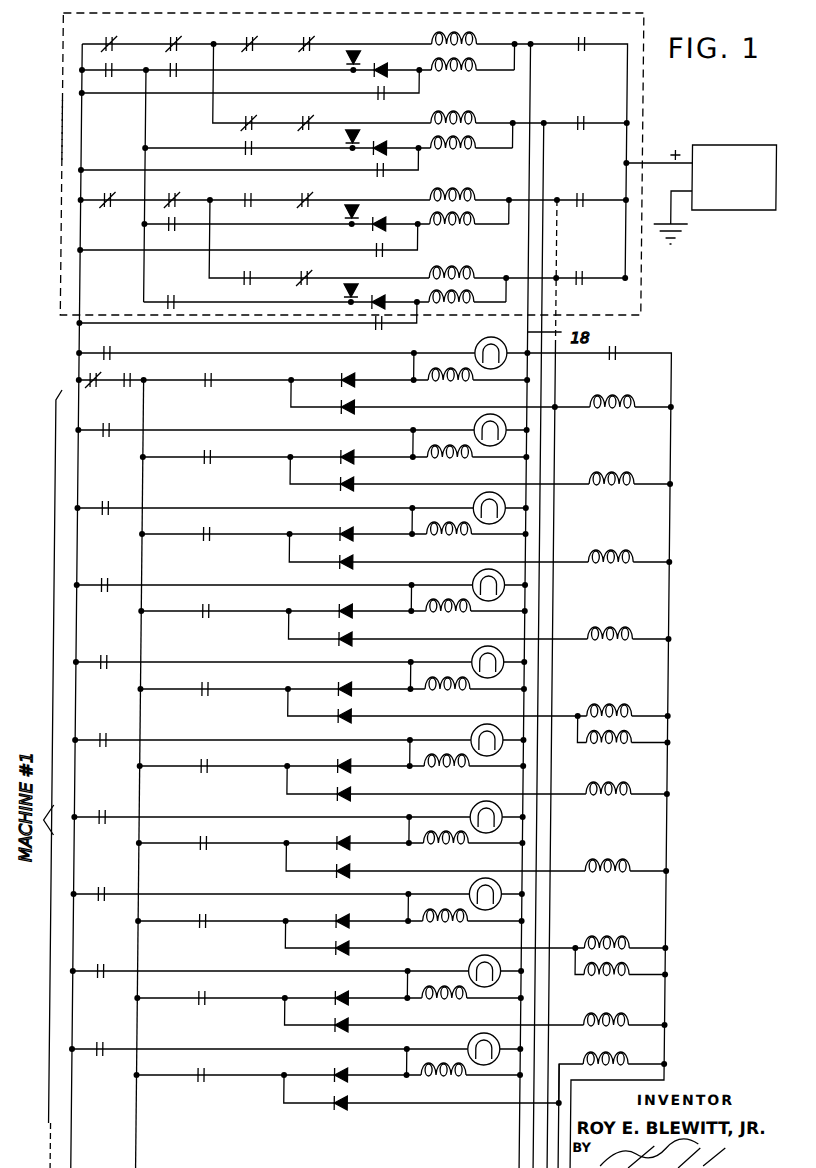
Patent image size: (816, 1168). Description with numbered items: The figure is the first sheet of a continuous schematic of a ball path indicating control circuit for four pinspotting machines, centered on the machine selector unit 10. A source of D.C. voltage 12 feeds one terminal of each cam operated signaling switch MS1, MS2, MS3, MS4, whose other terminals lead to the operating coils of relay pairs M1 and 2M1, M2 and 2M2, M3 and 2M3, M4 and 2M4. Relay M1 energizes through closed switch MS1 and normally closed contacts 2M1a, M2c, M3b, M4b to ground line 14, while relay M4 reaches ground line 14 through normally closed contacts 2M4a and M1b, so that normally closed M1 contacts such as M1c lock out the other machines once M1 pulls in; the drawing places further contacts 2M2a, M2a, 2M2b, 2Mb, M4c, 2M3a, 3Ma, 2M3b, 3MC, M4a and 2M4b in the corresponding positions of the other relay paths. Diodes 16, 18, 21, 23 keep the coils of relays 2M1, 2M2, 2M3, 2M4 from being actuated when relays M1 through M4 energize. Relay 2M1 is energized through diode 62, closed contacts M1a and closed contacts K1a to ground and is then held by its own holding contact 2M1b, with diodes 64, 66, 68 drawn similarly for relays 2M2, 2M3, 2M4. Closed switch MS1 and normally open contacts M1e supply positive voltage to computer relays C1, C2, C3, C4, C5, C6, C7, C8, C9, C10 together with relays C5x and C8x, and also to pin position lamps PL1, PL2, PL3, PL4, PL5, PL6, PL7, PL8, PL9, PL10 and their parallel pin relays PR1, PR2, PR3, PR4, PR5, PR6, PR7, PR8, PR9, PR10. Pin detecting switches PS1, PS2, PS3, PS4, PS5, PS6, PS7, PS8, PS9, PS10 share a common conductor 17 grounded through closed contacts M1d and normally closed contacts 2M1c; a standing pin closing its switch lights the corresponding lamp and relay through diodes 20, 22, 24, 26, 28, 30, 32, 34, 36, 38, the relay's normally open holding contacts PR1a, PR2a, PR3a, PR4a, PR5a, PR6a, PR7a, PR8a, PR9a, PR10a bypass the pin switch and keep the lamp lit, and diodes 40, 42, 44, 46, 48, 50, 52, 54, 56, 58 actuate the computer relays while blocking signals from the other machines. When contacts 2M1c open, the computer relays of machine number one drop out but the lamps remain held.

The machine selector unit 10 is at (63, 42).
The source of D.C. voltage 12 is at (756, 145).
The ground line 14 is at (63, 127).
The diode 16 is at (357, 48).
The diode 18 is at (352, 126).
The diode 21 is at (347, 213).
The diode 23 is at (356, 289).
The diode 62 is at (386, 63).
The diode 64 is at (382, 145).
The diode 66 is at (382, 222).
The diode 68 is at (382, 298).
The common conductor 17 is at (151, 408).
The relay M1 is at (458, 42).
The relay 2M1 is at (479, 77).
The relay M2 is at (453, 110).
The relay 2M2 is at (468, 154).
The relay M3 is at (474, 199).
The relay 2M3 is at (468, 230).
The relay M4 is at (474, 276).
The relay 2M4 is at (433, 306).
The cam operated signaling switch MS1 is at (579, 51).
The cam operated signaling switch MS2 is at (579, 130).
The cam operated signaling switch MS3 is at (579, 207).
The cam operated signaling switch MS4 is at (579, 286).
The n.c. contacts M4b is at (108, 41).
The n.c. contacts M3b is at (174, 40).
The n.c. contacts M2c is at (250, 40).
The n.c. contacts 2M1a is at (307, 40).
The contacts K1a is at (111, 78).
The contacts M1a is at (175, 78).
The holding contact 2M1b is at (384, 101).
The n.c. contacts M1c is at (248, 111).
The relay contact 2M2a is at (304, 111).
The relay contact M2a is at (244, 151).
The relay contact 2M2b is at (376, 170).
The n.c. contacts M1b is at (115, 208).
The relay contact 2Mb is at (180, 198).
The relay contact M4c is at (252, 196).
The relay contact 2M3a is at (306, 196).
The relay contact 3Ma is at (172, 231).
The relay contact 2M3b is at (377, 254).
The relay contact 3MC is at (246, 285).
The n.c. contacts 2M4a is at (306, 272).
The relay contact M4a is at (171, 294).
The relay contact 2M4b is at (377, 330).
The n.o. contacts M1e is at (622, 347).
The n.c. contacts 2M1c is at (88, 374).
The contacts M1d is at (135, 373).
The n.o. contacts PR1a is at (113, 346).
The n.o. contacts PR2a is at (108, 437).
The n.o. contacts PR3a is at (108, 515).
The n.o. contacts PR4a is at (108, 592).
The n.o. contacts PR5a is at (108, 669).
The n.o. contacts PR6a is at (108, 747).
The n.o. contacts PR7a is at (108, 824).
The n.o. contacts PR8a is at (108, 901).
The n.o. contacts PR9a is at (108, 978).
The n.o. contacts PR10a is at (108, 1056).
The pin detecting switch PS1 is at (216, 378).
The pin detecting switch PS2 is at (216, 455).
The pin detecting switch PS3 is at (216, 532).
The pin detecting switch PS4 is at (216, 609).
The pin detecting switch PS5 is at (216, 687).
The pin detecting switch PS6 is at (216, 764).
The pin detecting switch PS7 is at (216, 841).
The pin detecting switch PS8 is at (216, 919).
The pin detecting switch PS9 is at (216, 996).
The pin detecting switch PS10 is at (216, 1073).
The diode 20 is at (356, 377).
The diode 22 is at (356, 454).
The diode 24 is at (356, 531).
The diode 26 is at (356, 608).
The diode 28 is at (356, 686).
The diode 30 is at (356, 763).
The diode 32 is at (356, 840).
The diode 34 is at (356, 918).
The diode 36 is at (356, 995).
The diode 38 is at (356, 1072).
The diode 40 is at (347, 413).
The diode 42 is at (347, 490).
The diode 44 is at (347, 568).
The diode 46 is at (347, 645).
The diode 48 is at (347, 722).
The diode 50 is at (347, 800).
The diode 52 is at (347, 877).
The diode 54 is at (347, 954).
The diode 56 is at (347, 1031).
The diode 58 is at (347, 1109).
The pin position lamp PL1 is at (478, 350).
The pin position lamp PL2 is at (478, 427).
The pin position lamp PL3 is at (478, 505).
The pin position lamp PL4 is at (478, 582).
The pin position lamp PL5 is at (478, 659).
The pin position lamp PL6 is at (478, 737).
The pin position lamp PL7 is at (478, 814).
The pin position lamp PL8 is at (478, 891).
The pin position lamp PL9 is at (478, 968).
The pin position lamp PL10 is at (478, 1046).
The pin relay PR1 is at (467, 382).
The pin relay PR2 is at (467, 459).
The pin relay PR3 is at (467, 536).
The pin relay PR4 is at (467, 613).
The pin relay PR5 is at (467, 691).
The pin relay PR6 is at (467, 768).
The pin relay PR7 is at (467, 845).
The pin relay PR8 is at (467, 923).
The pin relay PR9 is at (467, 1000).
The pin relay PR10 is at (467, 1077).
The computer relay C1 is at (619, 404).
The computer relay C2 is at (619, 481).
The computer relay C3 is at (619, 559).
The computer relay C4 is at (619, 636).
The computer relay C5 is at (619, 714).
The relay C5x is at (627, 746).
The computer relay C6 is at (630, 797).
The computer relay C7 is at (630, 874).
The computer relay C8 is at (619, 945).
The relay C8x is at (627, 978).
The computer relay C9 is at (601, 1016).
The computer relay C10 is at (616, 1063).